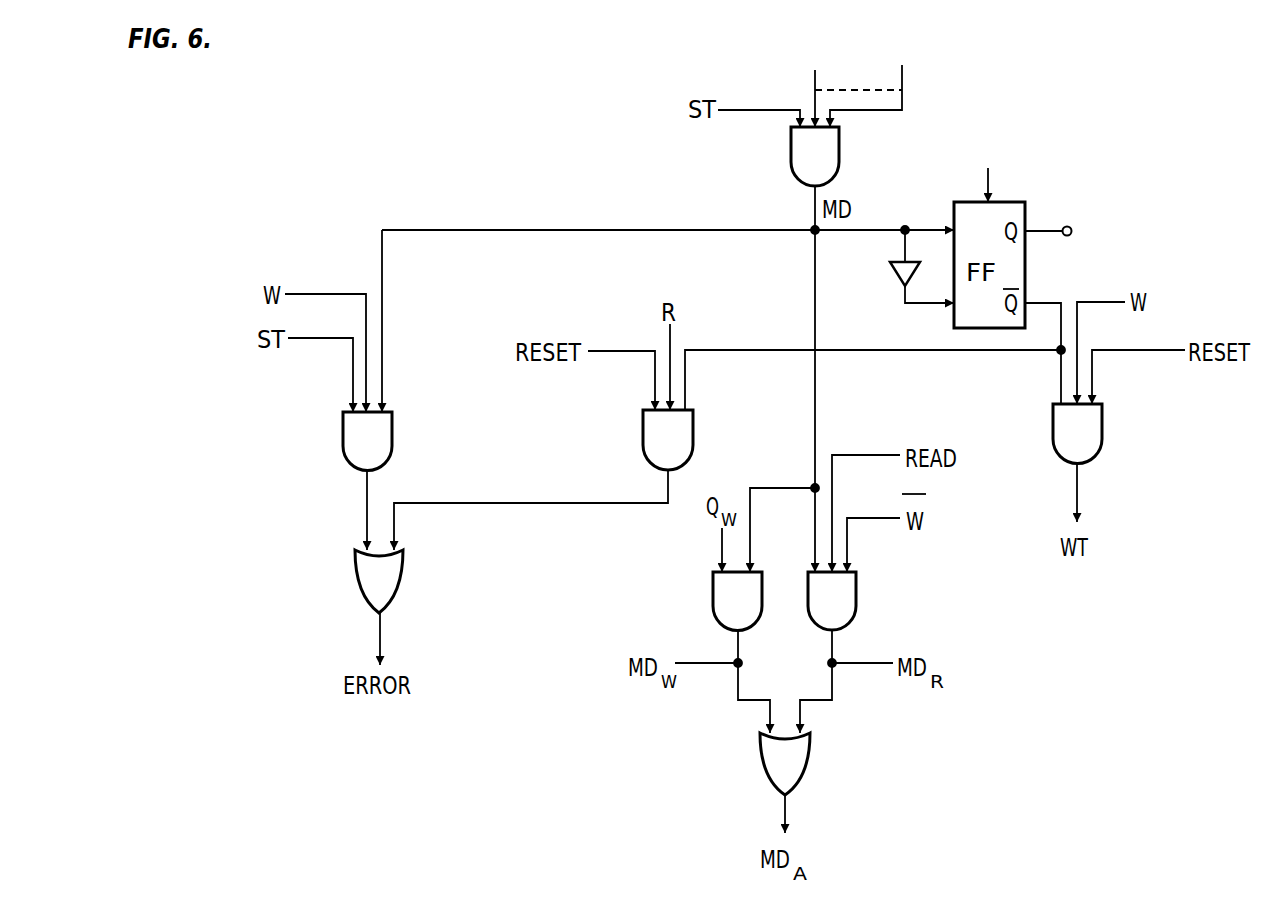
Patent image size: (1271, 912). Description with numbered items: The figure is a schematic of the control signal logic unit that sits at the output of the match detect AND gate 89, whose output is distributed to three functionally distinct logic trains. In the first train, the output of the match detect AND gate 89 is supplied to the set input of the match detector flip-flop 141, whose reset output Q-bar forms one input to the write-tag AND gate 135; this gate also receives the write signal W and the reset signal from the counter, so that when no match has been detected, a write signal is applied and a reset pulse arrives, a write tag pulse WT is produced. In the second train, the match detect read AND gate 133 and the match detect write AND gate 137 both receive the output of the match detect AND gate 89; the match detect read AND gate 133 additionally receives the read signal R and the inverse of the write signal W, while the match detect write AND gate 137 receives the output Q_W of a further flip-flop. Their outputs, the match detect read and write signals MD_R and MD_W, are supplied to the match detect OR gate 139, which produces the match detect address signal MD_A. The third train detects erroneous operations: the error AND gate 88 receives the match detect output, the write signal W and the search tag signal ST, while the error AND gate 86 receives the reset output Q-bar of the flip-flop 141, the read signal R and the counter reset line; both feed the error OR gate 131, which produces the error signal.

The match detect AND gate 89 is at (827, 168).
The error AND gate 88 is at (379, 453).
The error AND gate 86 is at (680, 452).
The error OR gate 131 is at (393, 593).
The write-tag AND gate 135 is at (1092, 447).
The match detect write AND gate 137 is at (753, 614).
The match detect read AND gate 133 is at (847, 614).
The match detect OR gate 139 is at (799, 776).
The match detector flip-flop 141 is at (1027, 218).